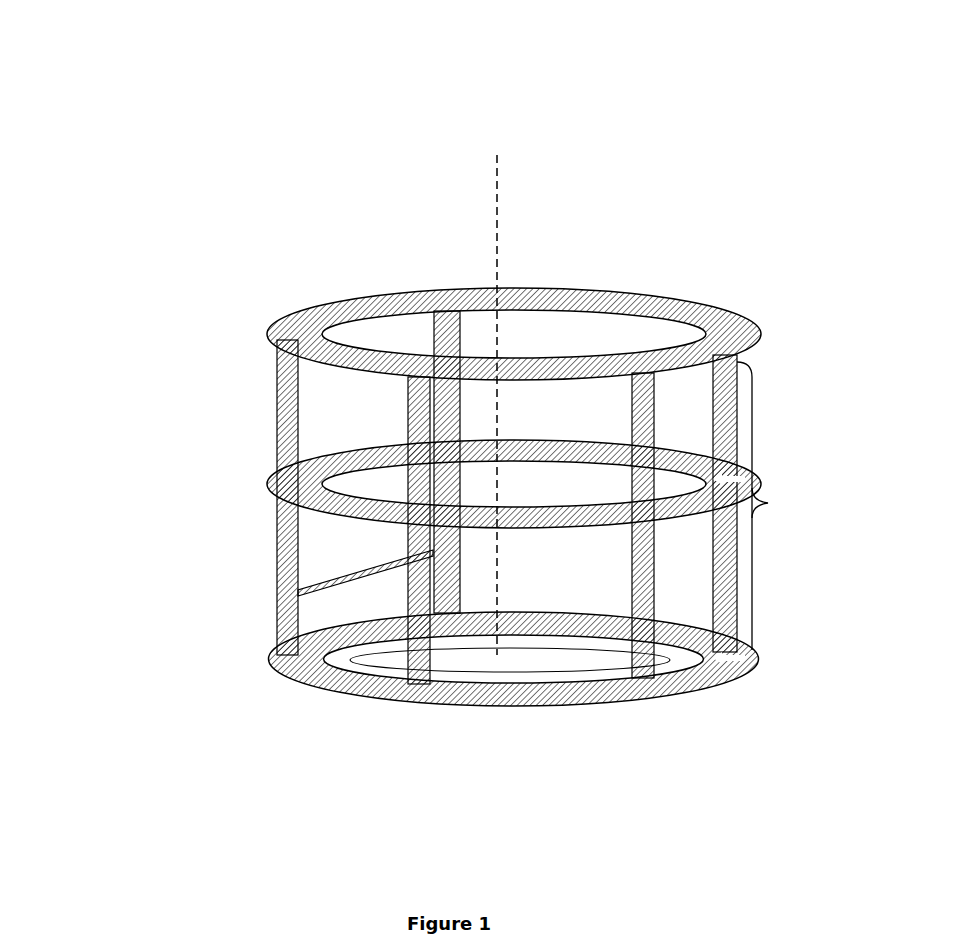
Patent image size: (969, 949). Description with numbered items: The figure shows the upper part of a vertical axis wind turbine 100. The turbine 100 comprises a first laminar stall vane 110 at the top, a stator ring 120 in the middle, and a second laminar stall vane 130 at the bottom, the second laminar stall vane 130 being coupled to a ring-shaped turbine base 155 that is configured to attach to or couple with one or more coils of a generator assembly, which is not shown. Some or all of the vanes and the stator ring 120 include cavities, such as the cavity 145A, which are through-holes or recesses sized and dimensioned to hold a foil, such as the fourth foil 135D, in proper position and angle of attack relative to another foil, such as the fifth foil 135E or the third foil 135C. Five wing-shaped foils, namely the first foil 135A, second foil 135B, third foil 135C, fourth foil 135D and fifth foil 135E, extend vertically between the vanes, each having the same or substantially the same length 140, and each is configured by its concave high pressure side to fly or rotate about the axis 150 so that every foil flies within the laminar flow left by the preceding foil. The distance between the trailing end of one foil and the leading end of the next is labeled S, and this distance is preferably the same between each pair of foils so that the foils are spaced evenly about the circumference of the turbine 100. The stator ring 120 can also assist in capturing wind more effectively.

The vertical axis wind turbine 100 is at (450, 450).
The first laminar stall vane 110 is at (275, 322).
The stator ring 120 is at (277, 488).
The second laminar stall vane 130 is at (277, 657).
The first foil 135A is at (279, 423).
The second foil 135B is at (407, 688).
The third foil 135C is at (622, 682).
The fourth foil 135D is at (735, 433).
The fifth foil 135E is at (478, 303).
The length 140 is at (793, 511).
The cavity 145A is at (755, 472).
The axis 150 is at (497, 200).
The turbine base 155 is at (508, 680).
The distance between foils S is at (298, 590).